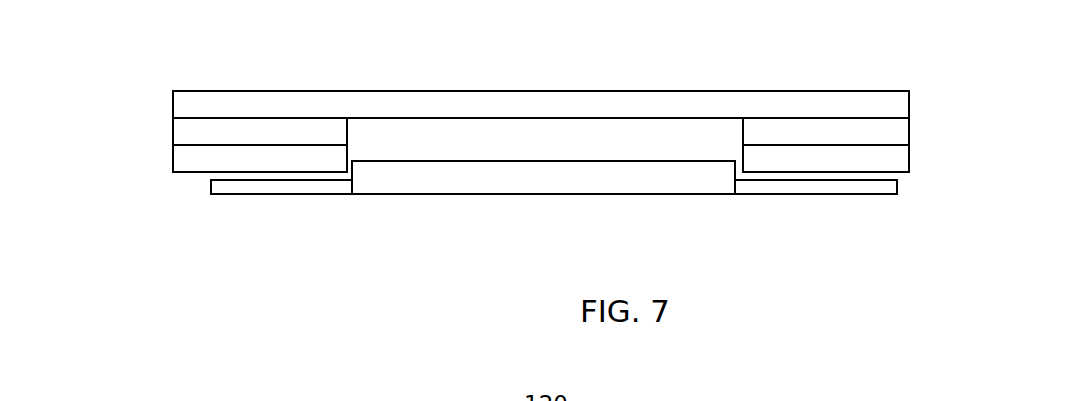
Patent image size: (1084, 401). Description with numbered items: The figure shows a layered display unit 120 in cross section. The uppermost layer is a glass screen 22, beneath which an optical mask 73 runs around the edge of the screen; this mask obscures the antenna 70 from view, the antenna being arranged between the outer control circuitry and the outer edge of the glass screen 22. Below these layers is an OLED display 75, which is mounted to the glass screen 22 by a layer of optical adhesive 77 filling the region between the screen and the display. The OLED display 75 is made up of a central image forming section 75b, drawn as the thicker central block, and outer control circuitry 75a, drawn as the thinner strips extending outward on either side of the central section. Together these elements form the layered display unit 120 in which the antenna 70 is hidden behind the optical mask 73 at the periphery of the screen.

The glass screen 22 is at (911, 105).
The optical mask 73 is at (182, 132).
The antenna 70 is at (182, 163).
The optical adhesive 77 is at (553, 130).
The OLED display 75 is at (554, 218).
The outer control circuitry 75a is at (265, 187).
The central image forming section 75b is at (553, 188).
The display unit 120 is at (982, 135).